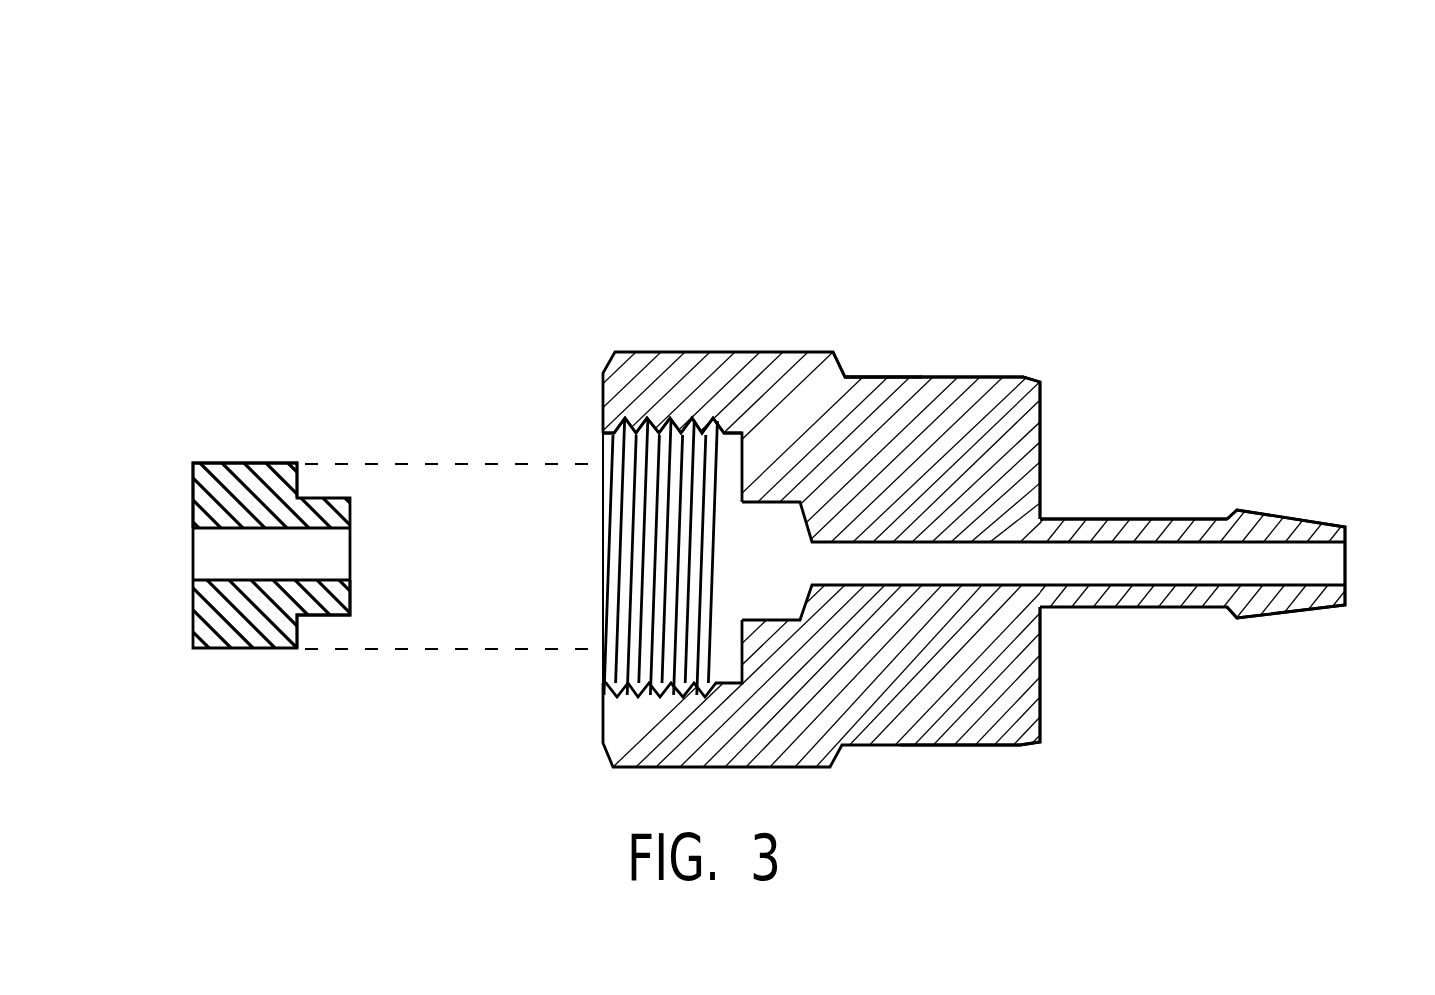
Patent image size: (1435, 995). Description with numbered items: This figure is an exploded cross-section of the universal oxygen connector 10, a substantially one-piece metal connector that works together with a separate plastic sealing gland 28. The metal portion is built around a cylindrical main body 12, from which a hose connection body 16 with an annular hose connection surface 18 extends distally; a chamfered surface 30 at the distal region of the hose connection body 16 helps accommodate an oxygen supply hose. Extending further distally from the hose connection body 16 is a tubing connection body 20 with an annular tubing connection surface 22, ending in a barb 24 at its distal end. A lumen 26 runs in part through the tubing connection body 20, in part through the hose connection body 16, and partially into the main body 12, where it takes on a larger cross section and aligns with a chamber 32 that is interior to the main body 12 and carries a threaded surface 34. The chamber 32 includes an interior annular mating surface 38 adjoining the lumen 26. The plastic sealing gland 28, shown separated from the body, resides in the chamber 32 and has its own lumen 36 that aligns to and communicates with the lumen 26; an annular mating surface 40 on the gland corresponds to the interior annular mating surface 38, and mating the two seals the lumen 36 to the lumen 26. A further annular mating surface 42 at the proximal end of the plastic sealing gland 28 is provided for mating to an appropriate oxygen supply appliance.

The universal oxygen connector 10 is at (1222, 153).
The main body 12 is at (821, 512).
The hose connection body 16 is at (942, 373).
The annular hose connection surface 18 is at (872, 330).
The tubing connection body 20 is at (1148, 480).
The annular tubing connection surface 22 is at (1192, 491).
The barb 24 is at (1305, 539).
The lumen 26 is at (1087, 561).
The plastic sealing gland 28 is at (284, 459).
The chamfered surface 30 is at (1023, 712).
The chamber 32 is at (580, 507).
The threaded surface 34 is at (600, 558).
The lumen 36 is at (319, 558).
The interior annular mating surface 38 is at (603, 441).
The annular mating surface 40 is at (300, 632).
The annular mating surface 42 is at (229, 555).